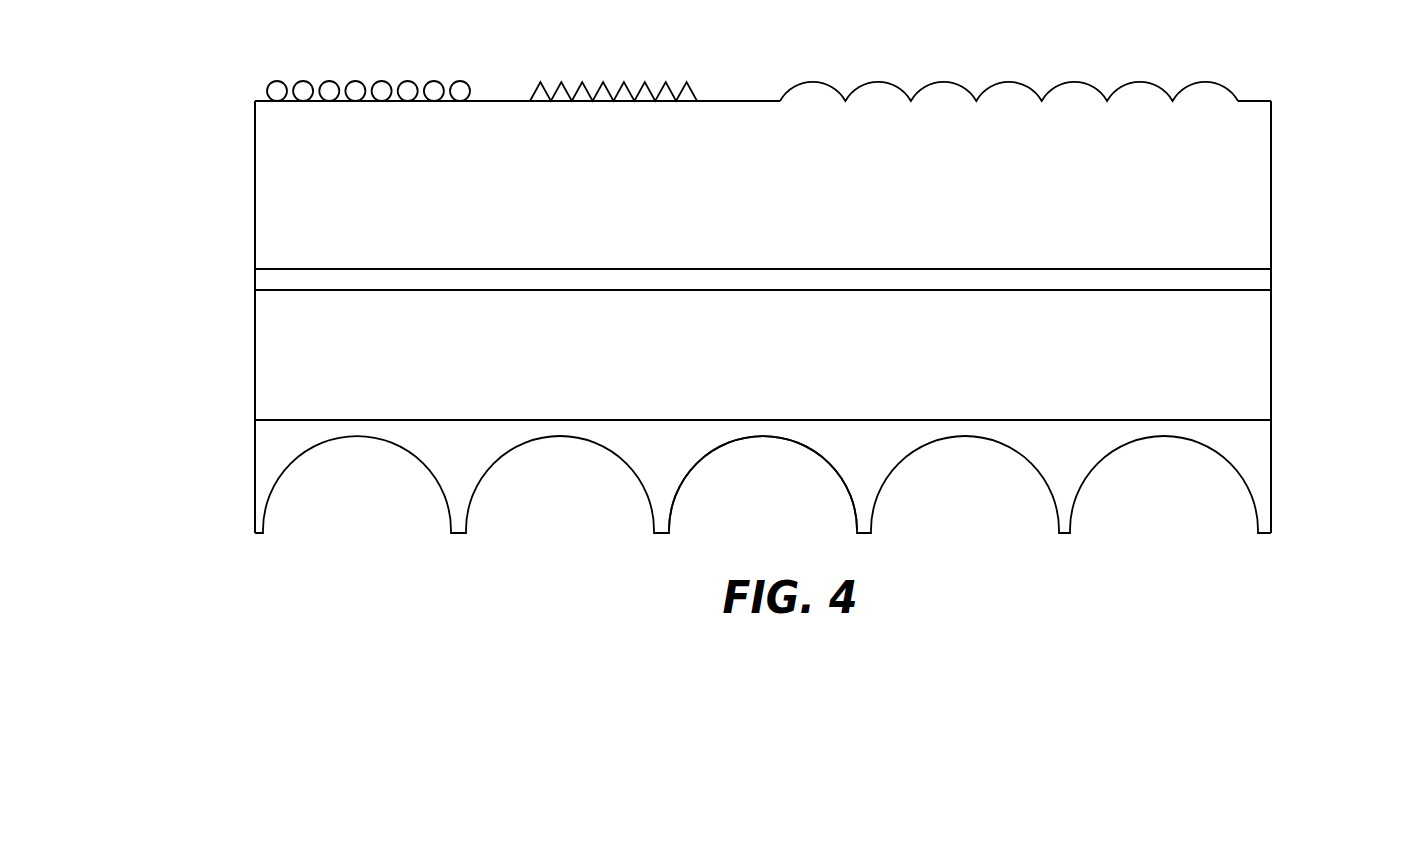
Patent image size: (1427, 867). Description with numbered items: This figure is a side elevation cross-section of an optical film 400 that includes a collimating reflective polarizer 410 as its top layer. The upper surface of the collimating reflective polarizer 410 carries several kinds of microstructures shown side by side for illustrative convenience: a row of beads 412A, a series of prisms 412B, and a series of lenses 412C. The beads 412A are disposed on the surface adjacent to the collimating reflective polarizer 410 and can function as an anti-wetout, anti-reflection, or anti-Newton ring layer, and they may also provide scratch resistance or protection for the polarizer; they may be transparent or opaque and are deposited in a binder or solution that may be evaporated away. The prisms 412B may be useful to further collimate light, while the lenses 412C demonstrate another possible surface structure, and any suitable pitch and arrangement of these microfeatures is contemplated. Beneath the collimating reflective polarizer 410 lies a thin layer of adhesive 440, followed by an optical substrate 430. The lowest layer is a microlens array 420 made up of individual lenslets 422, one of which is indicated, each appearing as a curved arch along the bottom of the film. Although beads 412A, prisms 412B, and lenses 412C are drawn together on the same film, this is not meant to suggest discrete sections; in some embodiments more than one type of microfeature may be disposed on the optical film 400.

The optical film 400 is at (160, 123).
The collimating reflective polarizer 410 is at (1273, 171).
The beads 412A is at (267, 75).
The prisms 412B is at (697, 75).
The lenses 412C is at (780, 75).
The adhesive 440 is at (1273, 280).
The optical substrate 430 is at (1273, 363).
The microlens array 420 is at (1273, 469).
The lenslet 422 is at (788, 443).